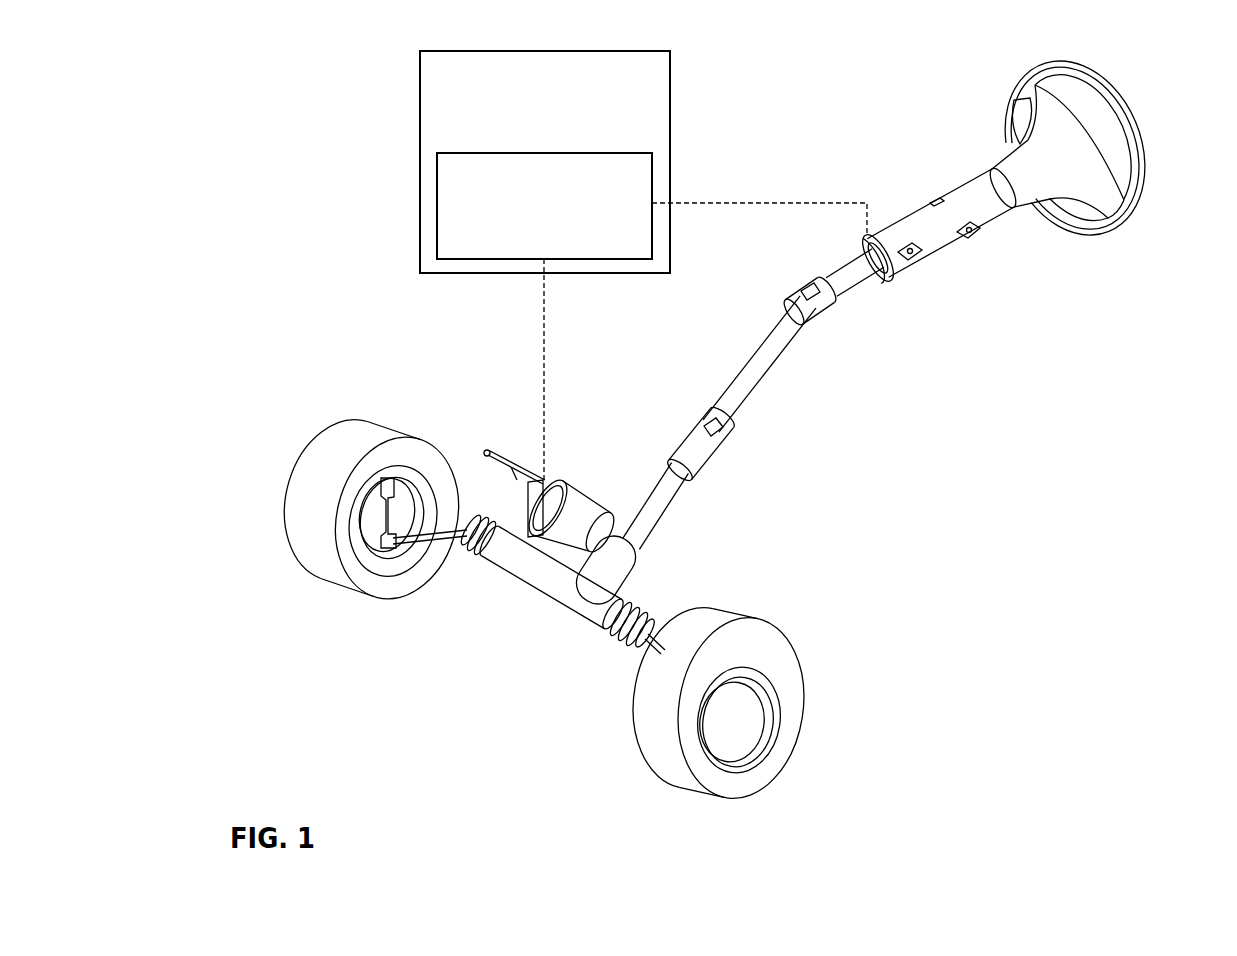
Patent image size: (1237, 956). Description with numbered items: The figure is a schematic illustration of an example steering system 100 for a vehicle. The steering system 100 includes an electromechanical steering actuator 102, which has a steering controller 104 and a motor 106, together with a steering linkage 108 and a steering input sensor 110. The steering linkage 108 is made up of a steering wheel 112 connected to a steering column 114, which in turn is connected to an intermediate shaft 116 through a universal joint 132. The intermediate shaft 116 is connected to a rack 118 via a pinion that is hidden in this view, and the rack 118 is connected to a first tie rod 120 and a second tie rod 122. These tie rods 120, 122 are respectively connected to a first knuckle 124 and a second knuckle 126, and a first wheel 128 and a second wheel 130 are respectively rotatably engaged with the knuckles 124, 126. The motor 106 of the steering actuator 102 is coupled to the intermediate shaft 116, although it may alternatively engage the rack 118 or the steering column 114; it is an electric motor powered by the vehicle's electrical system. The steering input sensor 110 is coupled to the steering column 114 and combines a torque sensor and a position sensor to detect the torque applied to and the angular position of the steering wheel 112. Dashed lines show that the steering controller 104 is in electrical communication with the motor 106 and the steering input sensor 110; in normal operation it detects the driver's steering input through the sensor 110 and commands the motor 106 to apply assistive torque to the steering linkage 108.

The steering system 100 is at (360, 130).
The electromechanical steering actuator 102 is at (545, 162).
The steering controller 104 is at (652, 318).
The motor 106 is at (575, 513).
The steering linkage 108 is at (887, 432).
The steering input sensor 110 is at (890, 280).
The steering wheel 112 is at (1117, 218).
The steering column 114 is at (935, 242).
The intermediate shaft 116 is at (750, 383).
The rack 118 is at (530, 573).
The first tie rod 120 is at (420, 568).
The second tie rod 122 is at (650, 660).
The first knuckle 124 is at (375, 510).
The second knuckle 126 is at (677, 626).
The first wheel 128 is at (382, 440).
The second wheel 130 is at (735, 635).
The universal joint 132 is at (818, 313).